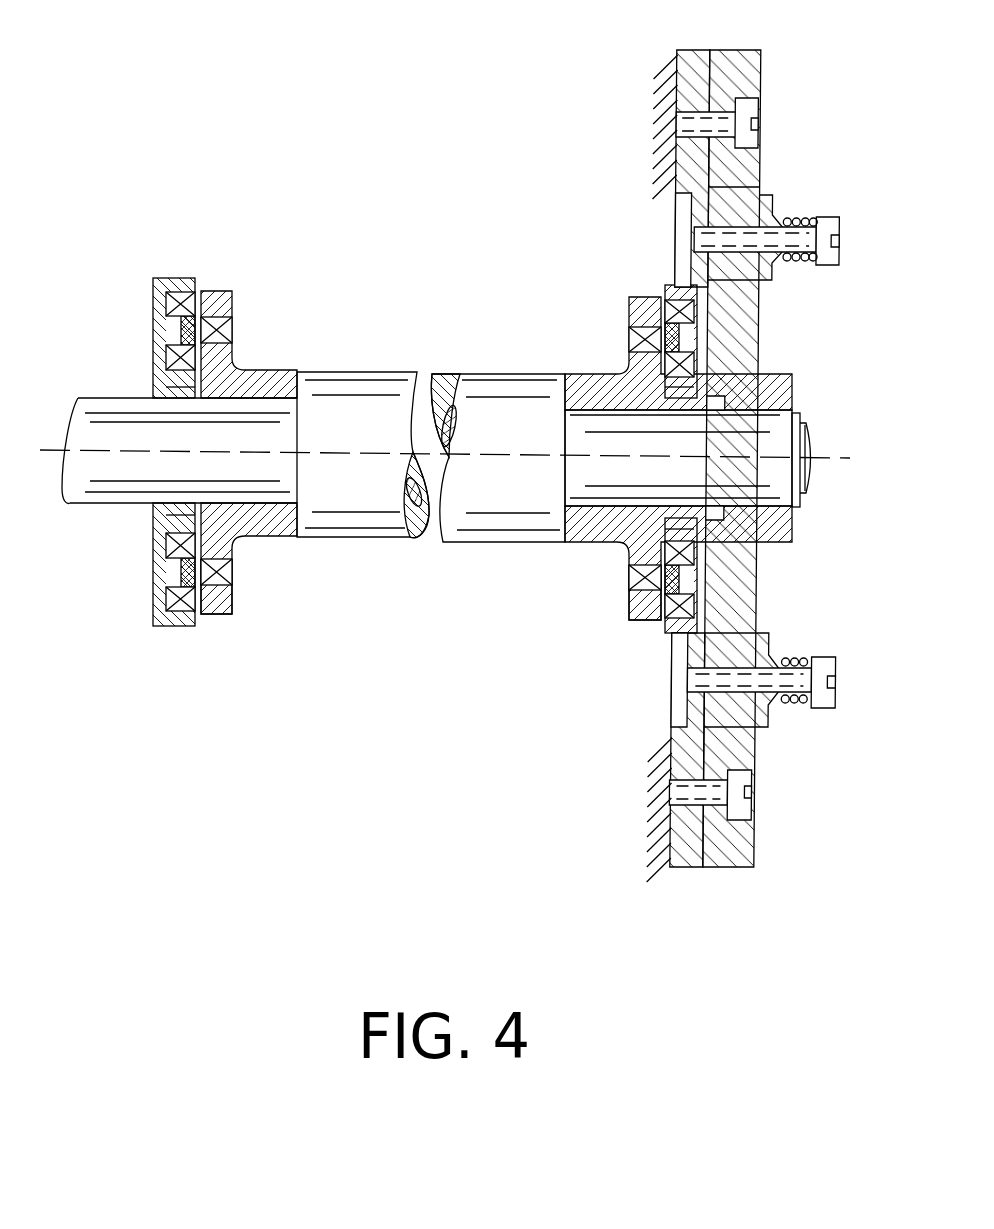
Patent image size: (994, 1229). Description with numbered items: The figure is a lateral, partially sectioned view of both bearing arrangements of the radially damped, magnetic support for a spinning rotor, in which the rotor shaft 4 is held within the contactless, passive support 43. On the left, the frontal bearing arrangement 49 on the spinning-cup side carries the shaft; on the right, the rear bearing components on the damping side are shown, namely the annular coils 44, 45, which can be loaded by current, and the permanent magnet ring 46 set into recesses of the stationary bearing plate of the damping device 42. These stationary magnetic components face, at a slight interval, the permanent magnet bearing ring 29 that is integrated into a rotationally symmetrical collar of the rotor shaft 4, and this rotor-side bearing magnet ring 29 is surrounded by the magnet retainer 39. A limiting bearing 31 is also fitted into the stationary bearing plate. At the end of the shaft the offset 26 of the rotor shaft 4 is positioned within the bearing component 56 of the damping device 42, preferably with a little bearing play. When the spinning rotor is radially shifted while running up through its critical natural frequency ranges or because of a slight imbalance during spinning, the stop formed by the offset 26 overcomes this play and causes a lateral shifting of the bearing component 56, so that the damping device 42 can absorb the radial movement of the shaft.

The rotor shaft 4 is at (478, 373).
The offset 26 is at (770, 474).
The permanent magnet bearing ring 29 is at (224, 330).
The limiting bearing 31 is at (215, 536).
The magnet retainer 39 is at (224, 611).
The damping device 42 is at (787, 118).
The contactless, passive support 43 is at (330, 692).
The annular coil 44 is at (165, 547).
The annular coil 45 is at (195, 297).
The permanent magnet ring 46 is at (679, 336).
The frontal bearing arrangement 49 is at (110, 343).
The bearing component 56 is at (814, 400).